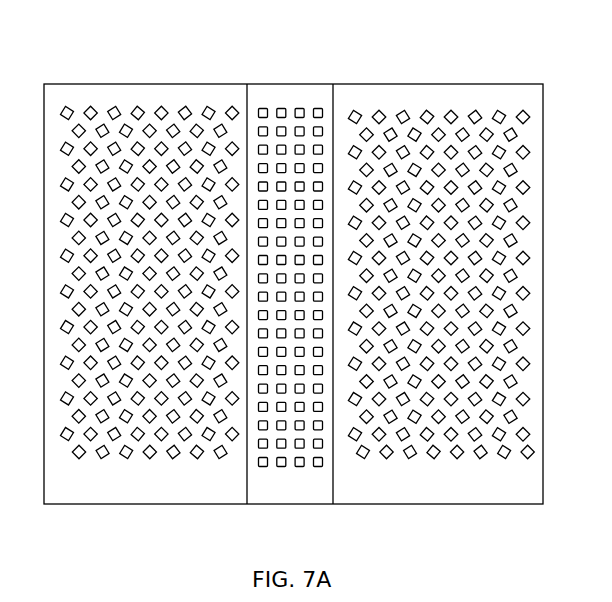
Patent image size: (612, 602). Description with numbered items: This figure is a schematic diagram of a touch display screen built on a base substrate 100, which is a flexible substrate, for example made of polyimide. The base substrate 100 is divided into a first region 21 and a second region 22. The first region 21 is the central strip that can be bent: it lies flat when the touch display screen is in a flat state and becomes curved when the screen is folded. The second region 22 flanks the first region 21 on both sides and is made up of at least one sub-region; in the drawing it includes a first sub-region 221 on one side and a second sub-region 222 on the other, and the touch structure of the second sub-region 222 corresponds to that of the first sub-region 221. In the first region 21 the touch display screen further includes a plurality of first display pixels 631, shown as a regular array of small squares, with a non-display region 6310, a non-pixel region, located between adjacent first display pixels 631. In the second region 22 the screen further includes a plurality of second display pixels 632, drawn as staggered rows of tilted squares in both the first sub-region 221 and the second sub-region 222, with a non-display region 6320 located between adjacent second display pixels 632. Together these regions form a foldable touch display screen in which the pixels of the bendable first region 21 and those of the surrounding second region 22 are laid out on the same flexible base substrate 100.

The base substrate 100 is at (80, 83).
The first region 21 is at (297, 107).
The second region 22 is at (297, 290).
The first sub-region 221 is at (140, 97).
The second sub-region 222 is at (413, 105).
The first display pixels 631 is at (281, 466).
The non-display region 6310 is at (309, 467).
The second display pixels 632 is at (197, 457).
The non-display region 6320 is at (137, 457).